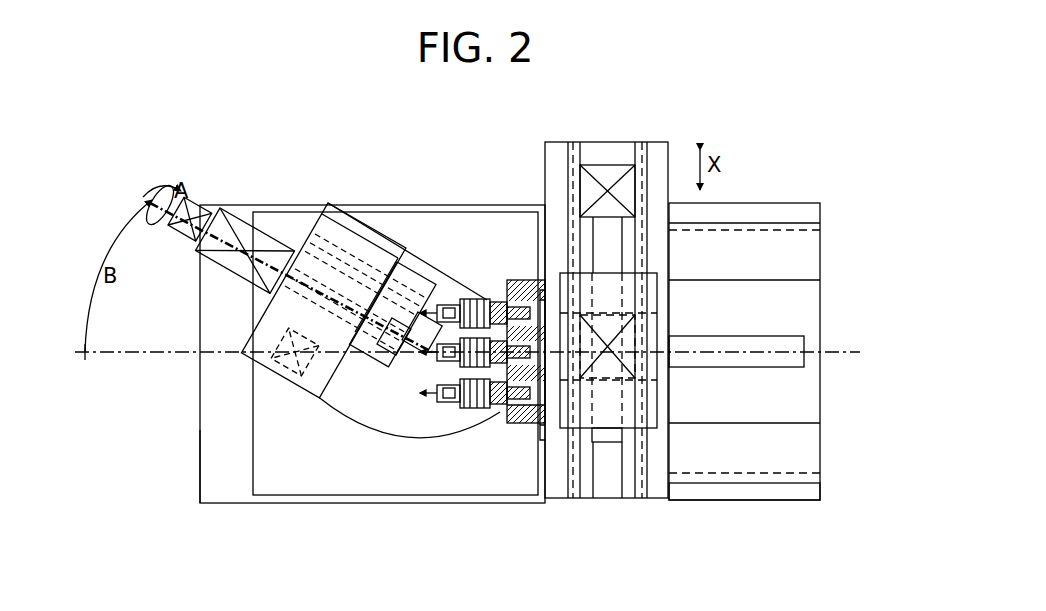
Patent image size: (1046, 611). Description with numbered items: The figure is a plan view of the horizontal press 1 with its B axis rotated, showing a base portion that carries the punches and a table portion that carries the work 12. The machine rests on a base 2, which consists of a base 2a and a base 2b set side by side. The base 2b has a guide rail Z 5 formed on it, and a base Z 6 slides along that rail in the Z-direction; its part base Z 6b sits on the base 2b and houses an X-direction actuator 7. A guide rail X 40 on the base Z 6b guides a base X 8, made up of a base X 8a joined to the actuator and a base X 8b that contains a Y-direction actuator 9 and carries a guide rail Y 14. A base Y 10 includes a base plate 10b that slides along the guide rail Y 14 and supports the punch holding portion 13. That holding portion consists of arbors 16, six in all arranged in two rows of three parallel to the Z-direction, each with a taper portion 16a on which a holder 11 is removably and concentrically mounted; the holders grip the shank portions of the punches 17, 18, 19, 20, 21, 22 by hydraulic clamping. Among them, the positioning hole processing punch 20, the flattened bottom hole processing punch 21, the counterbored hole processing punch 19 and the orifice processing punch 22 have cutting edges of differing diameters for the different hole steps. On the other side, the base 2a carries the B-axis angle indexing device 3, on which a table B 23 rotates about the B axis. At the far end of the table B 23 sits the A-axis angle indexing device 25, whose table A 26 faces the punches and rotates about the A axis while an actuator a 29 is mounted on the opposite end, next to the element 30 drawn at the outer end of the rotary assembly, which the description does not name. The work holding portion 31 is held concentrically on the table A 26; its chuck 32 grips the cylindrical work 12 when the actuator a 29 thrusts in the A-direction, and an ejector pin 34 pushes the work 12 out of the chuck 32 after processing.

The horizontal press 1 is at (150, 487).
The base 2 is at (213, 405).
The base 2a is at (226, 480).
The base 2b is at (800, 497).
The B-axis angle indexing device 3 is at (276, 480).
The guide rail Z 5 is at (733, 482).
The base Z 6 is at (657, 150).
The base Z 6b is at (559, 160).
The X-direction actuator 7 is at (601, 178).
The base X 8 is at (605, 413).
The base X 8a is at (648, 292).
The base X 8b is at (648, 373).
The Y-direction actuator 9 is at (640, 337).
The base Y 10 is at (505, 423).
The base plate 10b is at (530, 425).
The holder 11 is at (478, 408).
The work 12 is at (462, 406).
The punch holding portion 13 is at (495, 408).
The guide rail Y 14 is at (547, 430).
The arbor 16 is at (479, 216).
The taper portion 16a is at (498, 300).
The punch 17 is at (465, 213).
The positioning hole processing punch 20 is at (438, 303).
The punch 18 is at (397, 485).
The flattened bottom hole processing punch 21 is at (440, 402).
The counterbored hole processing punch 19 is at (467, 462).
The orifice processing punch 22 is at (475, 352).
The table B 23 is at (336, 208).
The A-axis angle indexing device 25 is at (305, 240).
The table A 26 is at (393, 263).
The actuator a 29 is at (243, 230).
The rotary drive motor 30 is at (195, 198).
The work holding portion 31 is at (360, 392).
The chuck 32 is at (428, 335).
The ejector pin 34 is at (402, 325).
The guide rail X 40 is at (644, 488).